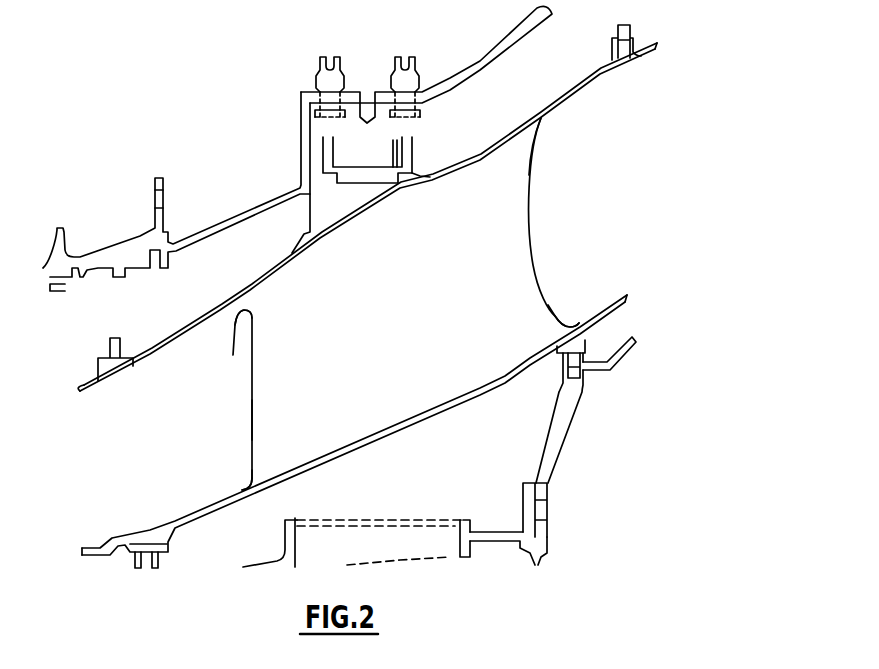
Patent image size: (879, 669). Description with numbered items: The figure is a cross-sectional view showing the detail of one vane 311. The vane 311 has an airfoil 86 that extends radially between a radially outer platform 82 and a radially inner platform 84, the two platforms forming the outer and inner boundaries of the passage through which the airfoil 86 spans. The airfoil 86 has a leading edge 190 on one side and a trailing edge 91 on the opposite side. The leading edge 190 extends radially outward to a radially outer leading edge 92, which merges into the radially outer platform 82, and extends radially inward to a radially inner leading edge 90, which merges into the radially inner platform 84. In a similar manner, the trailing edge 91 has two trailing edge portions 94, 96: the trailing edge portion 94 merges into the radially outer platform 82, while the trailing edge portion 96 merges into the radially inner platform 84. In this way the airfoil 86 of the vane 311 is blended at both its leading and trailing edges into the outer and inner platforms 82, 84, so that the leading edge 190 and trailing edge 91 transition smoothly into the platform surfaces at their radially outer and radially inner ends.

The vane 311 is at (681, 195).
The radially outer platform 82 is at (245, 289).
The radially inner platform 84 is at (231, 503).
The airfoil 86 is at (268, 385).
The radially inner leading edge 90 is at (249, 478).
The radially outer leading edge 92 is at (233, 356).
The leading edge 190 is at (250, 420).
The trailing edge 91 is at (532, 236).
The trailing edge portion 94 is at (541, 149).
The trailing edge portion 96 is at (553, 313).